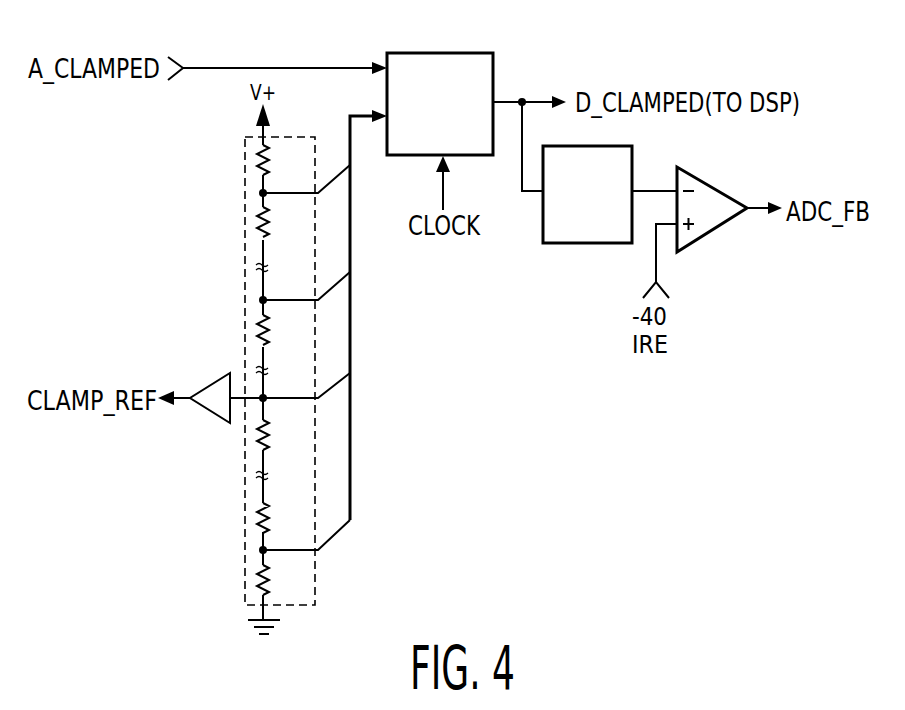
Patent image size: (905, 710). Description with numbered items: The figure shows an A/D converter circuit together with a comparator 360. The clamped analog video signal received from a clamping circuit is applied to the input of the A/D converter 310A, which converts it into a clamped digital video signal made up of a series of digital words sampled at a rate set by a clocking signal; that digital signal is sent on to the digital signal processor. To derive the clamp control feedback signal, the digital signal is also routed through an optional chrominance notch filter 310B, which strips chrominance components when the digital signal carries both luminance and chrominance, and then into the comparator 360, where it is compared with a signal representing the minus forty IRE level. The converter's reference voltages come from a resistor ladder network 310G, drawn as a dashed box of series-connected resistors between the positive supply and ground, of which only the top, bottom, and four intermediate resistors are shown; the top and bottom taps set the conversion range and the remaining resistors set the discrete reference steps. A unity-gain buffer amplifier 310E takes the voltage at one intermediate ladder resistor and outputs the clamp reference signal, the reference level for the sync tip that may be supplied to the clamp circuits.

The A/D converter 310A is at (445, 50).
The chrominance notch filter 310B is at (588, 246).
The unity gain buffer amplifier 310E is at (215, 421).
The resistor ladder network 310G is at (318, 583).
The comparator 360 is at (713, 188).